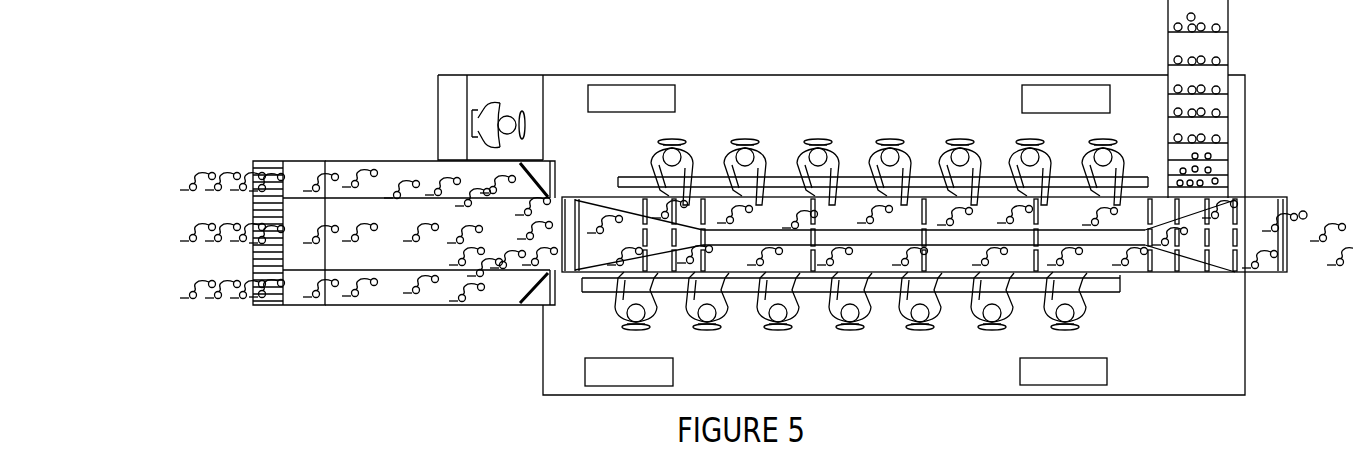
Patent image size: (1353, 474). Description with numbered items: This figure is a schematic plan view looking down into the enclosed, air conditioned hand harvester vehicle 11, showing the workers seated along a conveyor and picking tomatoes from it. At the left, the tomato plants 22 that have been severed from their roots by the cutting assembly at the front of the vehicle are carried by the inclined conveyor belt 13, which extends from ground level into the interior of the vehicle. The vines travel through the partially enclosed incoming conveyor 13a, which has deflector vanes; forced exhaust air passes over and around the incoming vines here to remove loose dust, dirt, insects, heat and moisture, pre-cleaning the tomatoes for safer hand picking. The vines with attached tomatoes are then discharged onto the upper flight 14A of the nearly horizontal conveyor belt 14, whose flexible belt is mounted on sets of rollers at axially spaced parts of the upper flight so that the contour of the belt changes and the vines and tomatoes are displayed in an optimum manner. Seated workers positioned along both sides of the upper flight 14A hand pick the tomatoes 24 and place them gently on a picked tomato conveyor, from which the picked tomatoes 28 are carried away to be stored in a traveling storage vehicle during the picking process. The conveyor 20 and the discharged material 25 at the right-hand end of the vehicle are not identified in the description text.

The hand harvester vehicle 11 is at (688, 75).
The inclined conveyor belt 13 is at (298, 306).
The partially enclosed incoming conveyor 13a is at (388, 306).
The conveyor belt 14 is at (567, 197).
The upper flight of conveyor belt 14A is at (906, 197).
The take-away conveyor 20 is at (1228, 47).
The tomato plants 22 is at (187, 299).
The tomatoes 24 is at (766, 197).
The discharged poultry pieces 25 is at (1338, 262).
The picked tomatoes 28 is at (1222, 117).